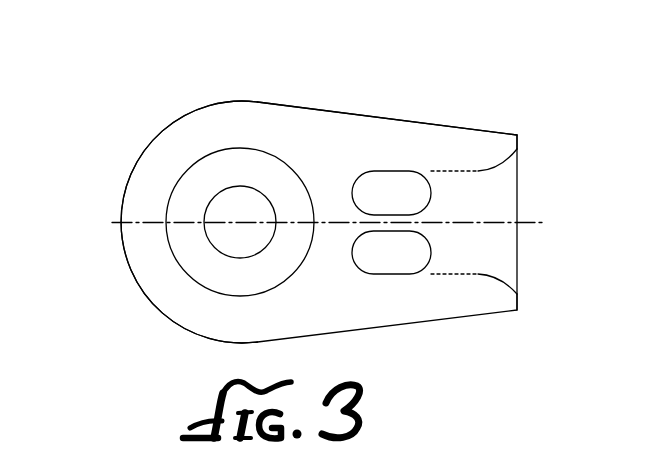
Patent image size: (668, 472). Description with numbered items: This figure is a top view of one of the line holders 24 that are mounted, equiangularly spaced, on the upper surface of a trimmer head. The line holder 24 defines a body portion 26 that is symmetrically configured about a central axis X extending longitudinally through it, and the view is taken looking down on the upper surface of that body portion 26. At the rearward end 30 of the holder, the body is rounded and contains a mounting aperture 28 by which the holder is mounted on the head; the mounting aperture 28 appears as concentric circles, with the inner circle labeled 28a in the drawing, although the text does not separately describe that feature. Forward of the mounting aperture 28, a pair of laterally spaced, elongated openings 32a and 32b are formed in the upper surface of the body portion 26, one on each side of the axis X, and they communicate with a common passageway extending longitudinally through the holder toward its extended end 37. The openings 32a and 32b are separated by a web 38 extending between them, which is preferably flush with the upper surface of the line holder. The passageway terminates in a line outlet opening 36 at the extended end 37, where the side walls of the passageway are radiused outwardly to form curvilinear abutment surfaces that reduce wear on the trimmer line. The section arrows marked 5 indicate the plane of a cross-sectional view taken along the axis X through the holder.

The line holder 24 is at (378, 117).
The body portion 26 is at (327, 127).
The mounting aperture 28 is at (283, 163).
The bore 28a is at (233, 187).
The rearward end 30 is at (150, 303).
The elongated opening 32a is at (389, 253).
The elongated opening 32b is at (397, 185).
The line outlet opening 36 is at (517, 258).
The extended end 37 is at (517, 132).
The web 38 is at (382, 232).
The central axis X is at (155, 223).
The section line 5- 5 is at (103, 222).